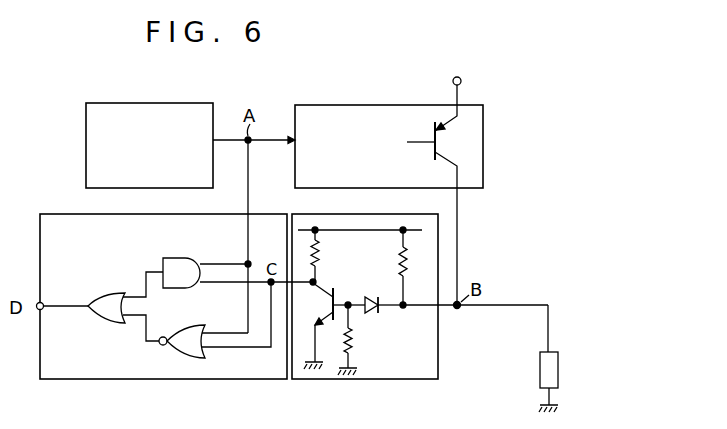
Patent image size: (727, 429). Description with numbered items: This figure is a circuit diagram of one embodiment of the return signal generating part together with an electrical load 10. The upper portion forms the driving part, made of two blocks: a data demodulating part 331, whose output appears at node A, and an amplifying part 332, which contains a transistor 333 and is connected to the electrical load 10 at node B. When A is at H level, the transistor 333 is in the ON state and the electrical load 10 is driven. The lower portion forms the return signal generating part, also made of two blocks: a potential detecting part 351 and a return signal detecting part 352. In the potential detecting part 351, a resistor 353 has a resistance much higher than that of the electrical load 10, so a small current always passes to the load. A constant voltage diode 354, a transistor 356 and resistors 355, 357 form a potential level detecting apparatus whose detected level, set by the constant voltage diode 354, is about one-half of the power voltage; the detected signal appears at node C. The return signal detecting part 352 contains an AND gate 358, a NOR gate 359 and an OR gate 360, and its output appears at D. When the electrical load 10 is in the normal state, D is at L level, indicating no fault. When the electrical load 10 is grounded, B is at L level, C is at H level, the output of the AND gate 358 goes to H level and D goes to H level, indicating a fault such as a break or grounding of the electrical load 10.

The data demodulating part 331 is at (160, 103).
The amplifying part 332 is at (388, 105).
The transistor 333 is at (446, 142).
The potential detecting part 351 is at (340, 379).
The return signal detecting part 352 is at (100, 380).
The resistor 353 is at (398, 262).
The constant voltage diode 354 is at (376, 296).
The resistor 355 is at (354, 342).
The transistor 356 is at (331, 302).
The resistor 357 is at (335, 256).
The AND gate 358 is at (176, 258).
The NOR gate 359 is at (183, 325).
The OR gate 360 is at (103, 284).
The electrical load 10 is at (559, 363).